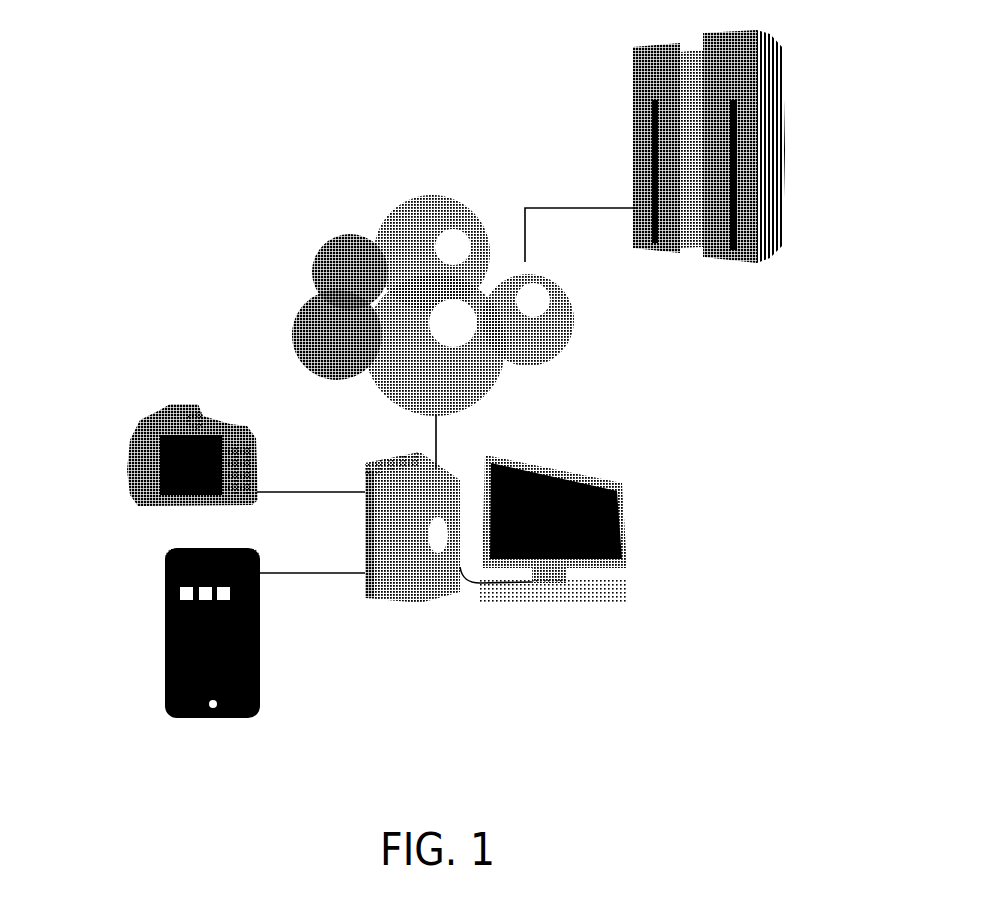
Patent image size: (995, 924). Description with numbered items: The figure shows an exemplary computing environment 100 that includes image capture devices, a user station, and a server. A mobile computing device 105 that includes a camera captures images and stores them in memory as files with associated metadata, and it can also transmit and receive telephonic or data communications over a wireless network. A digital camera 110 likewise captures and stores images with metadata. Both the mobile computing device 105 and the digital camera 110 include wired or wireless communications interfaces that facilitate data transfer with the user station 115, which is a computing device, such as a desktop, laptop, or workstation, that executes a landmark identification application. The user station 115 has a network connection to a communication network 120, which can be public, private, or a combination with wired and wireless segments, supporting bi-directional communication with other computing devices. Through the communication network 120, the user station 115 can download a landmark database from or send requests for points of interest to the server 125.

The computing environment 100 is at (281, 147).
The mobile computing device 105 is at (168, 583).
The digital camera 110 is at (128, 470).
The user station 115 is at (632, 537).
The communication network 120 is at (332, 268).
The server 125 is at (785, 140).